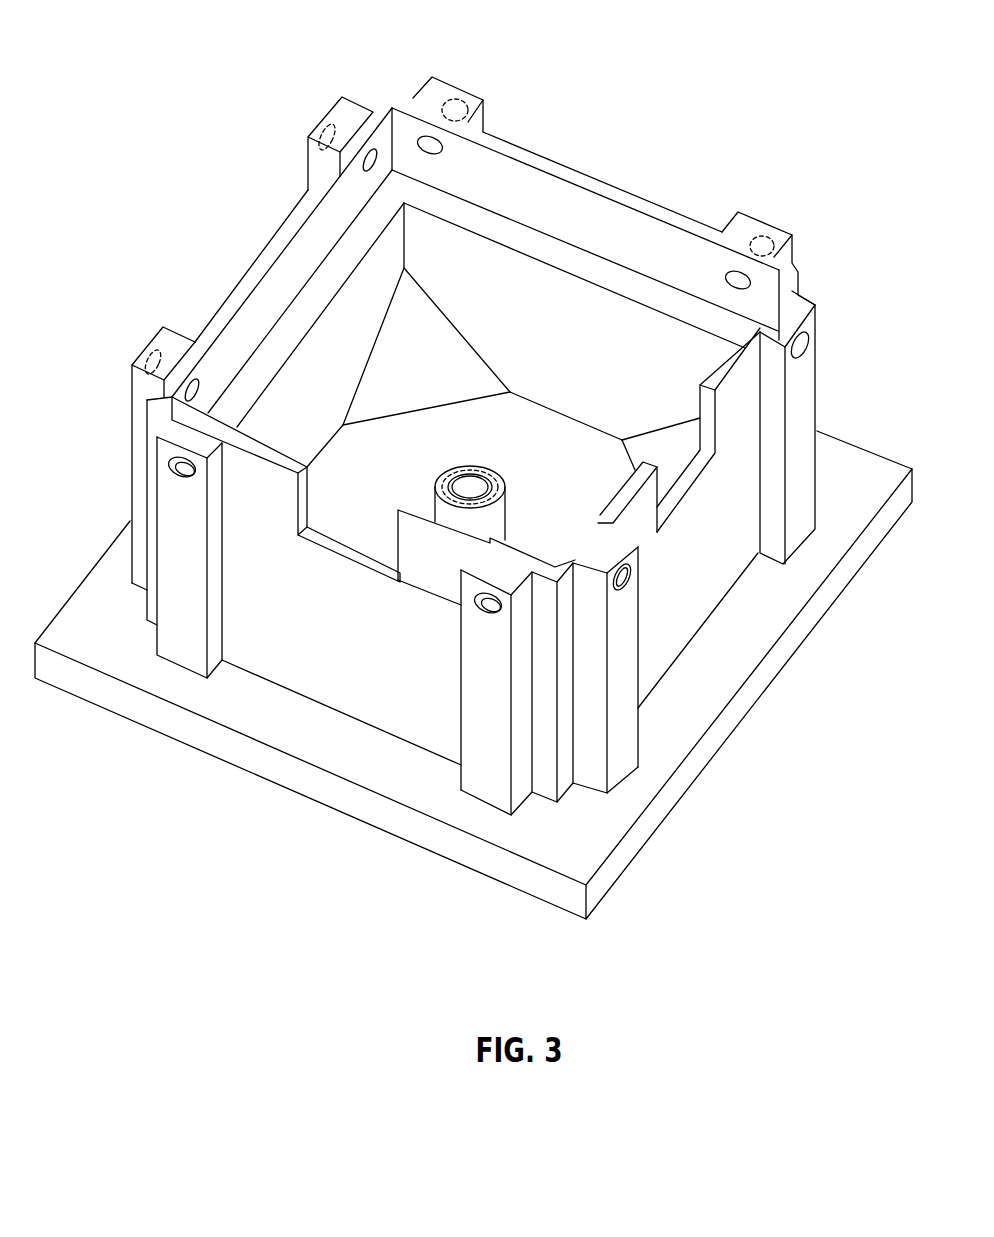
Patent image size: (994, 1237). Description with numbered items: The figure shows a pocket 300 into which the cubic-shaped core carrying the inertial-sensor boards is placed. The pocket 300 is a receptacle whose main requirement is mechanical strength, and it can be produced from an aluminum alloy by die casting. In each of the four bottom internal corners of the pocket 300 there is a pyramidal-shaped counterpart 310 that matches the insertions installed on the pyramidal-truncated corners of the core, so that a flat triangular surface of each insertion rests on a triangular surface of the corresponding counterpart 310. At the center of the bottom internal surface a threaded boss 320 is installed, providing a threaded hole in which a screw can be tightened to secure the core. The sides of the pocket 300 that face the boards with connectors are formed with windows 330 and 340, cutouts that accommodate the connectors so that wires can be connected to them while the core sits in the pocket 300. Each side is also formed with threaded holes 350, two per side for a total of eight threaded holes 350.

The pocket 300 is at (545, 158).
The counterparts 310 is at (413, 343).
The threaded boss 320 is at (477, 466).
The window 330 is at (684, 498).
The window 340 is at (357, 553).
The threaded holes 350 is at (460, 598).